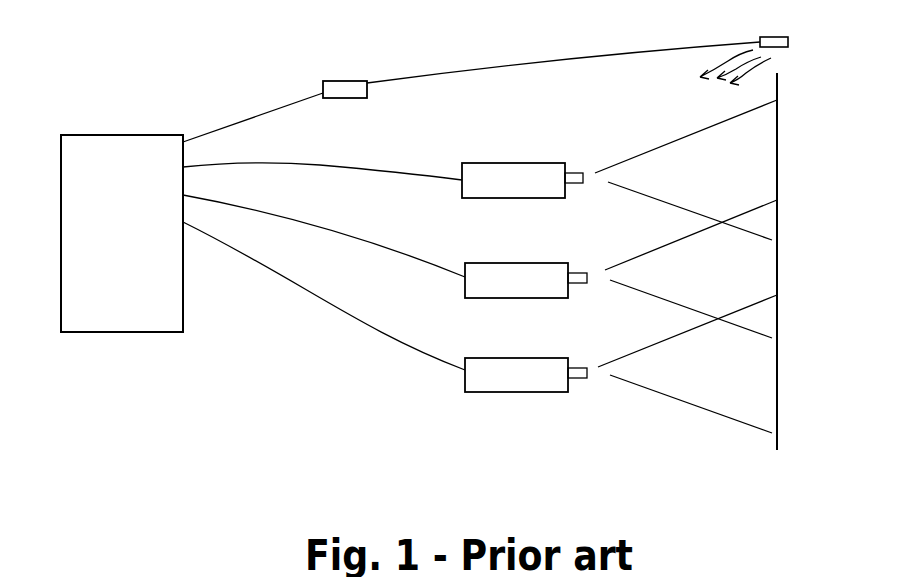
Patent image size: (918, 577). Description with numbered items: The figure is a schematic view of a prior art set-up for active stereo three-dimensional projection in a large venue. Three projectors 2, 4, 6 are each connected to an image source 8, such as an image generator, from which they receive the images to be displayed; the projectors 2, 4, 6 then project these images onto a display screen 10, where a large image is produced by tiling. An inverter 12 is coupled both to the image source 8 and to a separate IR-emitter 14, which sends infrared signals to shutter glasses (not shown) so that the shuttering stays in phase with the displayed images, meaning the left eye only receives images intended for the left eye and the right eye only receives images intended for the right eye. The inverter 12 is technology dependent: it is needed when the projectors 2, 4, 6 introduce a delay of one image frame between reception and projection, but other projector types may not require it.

The projector 2 is at (507, 175).
The projector 4 is at (500, 273).
The projector 6 is at (507, 368).
The image source 8 is at (145, 298).
The display screen 10 is at (777, 442).
The inverter 12 is at (350, 87).
The IR-emitter 14 is at (775, 42).